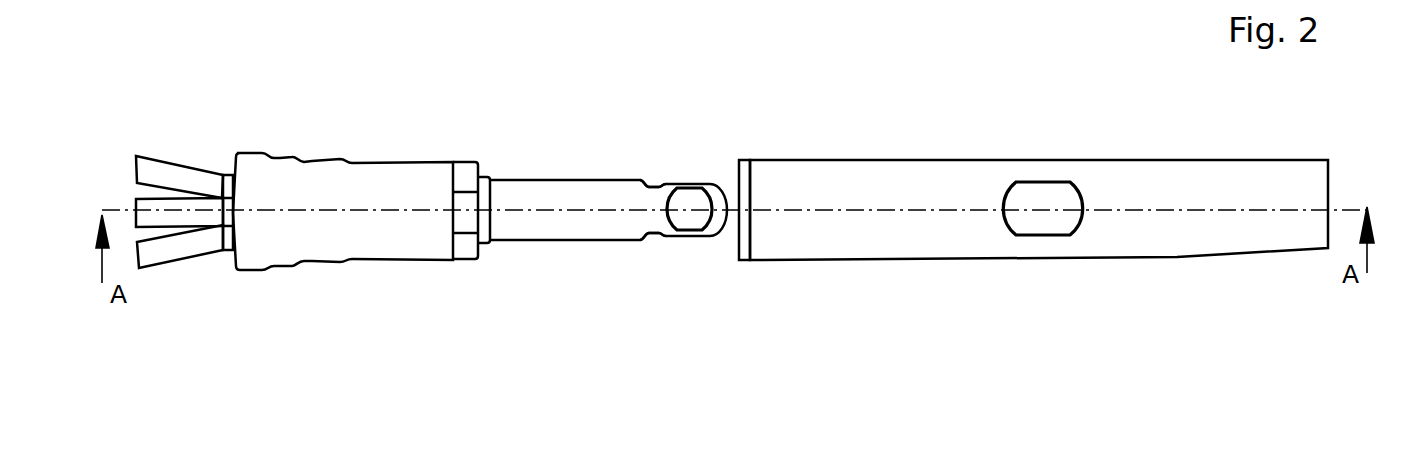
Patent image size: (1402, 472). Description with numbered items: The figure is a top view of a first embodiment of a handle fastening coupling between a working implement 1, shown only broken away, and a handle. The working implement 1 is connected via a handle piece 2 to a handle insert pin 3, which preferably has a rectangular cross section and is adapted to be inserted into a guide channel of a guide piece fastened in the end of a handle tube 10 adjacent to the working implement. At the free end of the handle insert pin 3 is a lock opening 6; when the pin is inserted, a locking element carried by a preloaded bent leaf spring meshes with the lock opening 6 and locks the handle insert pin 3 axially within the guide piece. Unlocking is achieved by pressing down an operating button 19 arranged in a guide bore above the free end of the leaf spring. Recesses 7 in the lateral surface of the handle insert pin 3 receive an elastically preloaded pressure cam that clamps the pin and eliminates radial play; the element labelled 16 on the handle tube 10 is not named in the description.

The working implement 1 is at (165, 168).
The handle piece 2 is at (398, 158).
The handle insert pin 3 is at (547, 177).
The lock opening 6 is at (687, 197).
The recesses 7 is at (652, 180).
The handle tube 10 is at (1033, 164).
The tube 16 is at (1147, 157).
The operating button 19 is at (1037, 190).